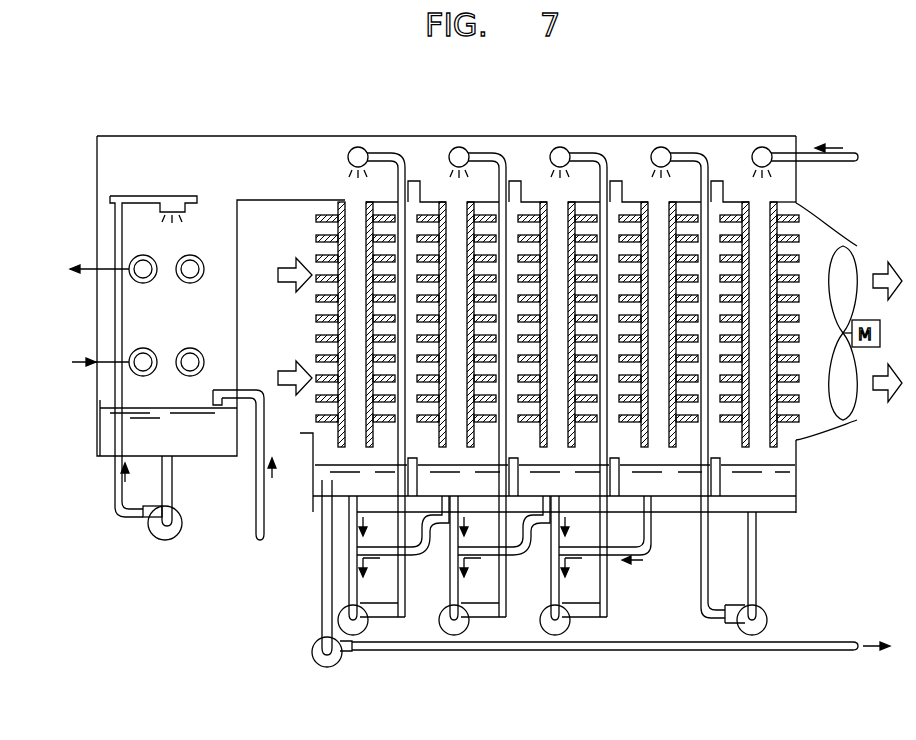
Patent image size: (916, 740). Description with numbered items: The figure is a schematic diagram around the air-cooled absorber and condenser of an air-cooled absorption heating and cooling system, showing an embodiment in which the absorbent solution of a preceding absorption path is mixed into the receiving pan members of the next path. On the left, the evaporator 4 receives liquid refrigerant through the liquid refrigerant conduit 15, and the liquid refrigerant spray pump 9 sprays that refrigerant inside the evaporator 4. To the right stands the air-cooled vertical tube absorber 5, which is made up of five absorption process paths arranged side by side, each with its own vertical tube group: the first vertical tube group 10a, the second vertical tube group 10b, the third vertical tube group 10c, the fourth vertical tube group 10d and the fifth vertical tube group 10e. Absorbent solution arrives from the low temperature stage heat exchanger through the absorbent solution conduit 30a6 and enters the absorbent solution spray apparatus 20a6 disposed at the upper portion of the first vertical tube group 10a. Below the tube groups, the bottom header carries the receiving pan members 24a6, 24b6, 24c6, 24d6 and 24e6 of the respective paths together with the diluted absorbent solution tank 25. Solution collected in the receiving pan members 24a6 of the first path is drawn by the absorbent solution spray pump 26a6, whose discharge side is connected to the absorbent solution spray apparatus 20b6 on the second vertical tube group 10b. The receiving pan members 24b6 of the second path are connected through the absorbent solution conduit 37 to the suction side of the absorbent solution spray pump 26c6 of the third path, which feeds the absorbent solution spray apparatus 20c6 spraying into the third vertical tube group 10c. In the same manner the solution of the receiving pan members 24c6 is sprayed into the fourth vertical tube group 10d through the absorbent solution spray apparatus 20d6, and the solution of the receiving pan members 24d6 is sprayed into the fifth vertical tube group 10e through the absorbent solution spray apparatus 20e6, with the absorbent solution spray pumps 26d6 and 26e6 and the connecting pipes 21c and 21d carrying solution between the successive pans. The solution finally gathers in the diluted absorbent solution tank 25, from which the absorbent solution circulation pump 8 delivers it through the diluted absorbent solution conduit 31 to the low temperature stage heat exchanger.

The evaporator 4 is at (196, 256).
The air-cooled vertical tube absorber 5 is at (587, 195).
The absorbent solution circulation pump 8 is at (311, 652).
The liquid refrigerant spray pump 9 is at (178, 540).
The first vertical tube group 10a is at (748, 203).
The second vertical tube group 10b is at (652, 203).
The third vertical tube group 10c is at (564, 275).
The fourth vertical tube group 10d is at (450, 203).
The fifth vertical tube group 10e is at (345, 205).
The liquid refrigerant conduit 15 is at (256, 488).
The absorbent solution spray apparatus 20a6 is at (762, 147).
The absorbent solution spray apparatus 20b6 is at (661, 147).
The absorbent solution spray apparatus 20c6 is at (560, 147).
The absorbent solution spray apparatus 20d6 is at (459, 147).
The absorbent solution spray apparatus 20e6 is at (358, 147).
The connecting pipe 21c is at (486, 533).
The connecting pipe 21d is at (385, 533).
The receiving pan members 24a6 is at (795, 487).
The receiving pan members 24b6 is at (680, 487).
The receiving pan members 24c6 is at (541, 488).
The receiving pan members 24d6 is at (440, 488).
The receiving pan members 24e6 is at (312, 465).
The diluted absorbent solution tank 25 is at (343, 512).
The absorbent solution spray pump 26a6 is at (769, 618).
The absorbent solution spray pump 26c6 is at (561, 632).
The absorbent solution spray pump 26d6 is at (466, 632).
The absorbent solution spray pump 26e6 is at (365, 632).
The absorbent solution conduit 30a6 is at (855, 152).
The diluted absorbent solution conduit 31 is at (680, 652).
The absorbent solution conduit 37 is at (606, 562).